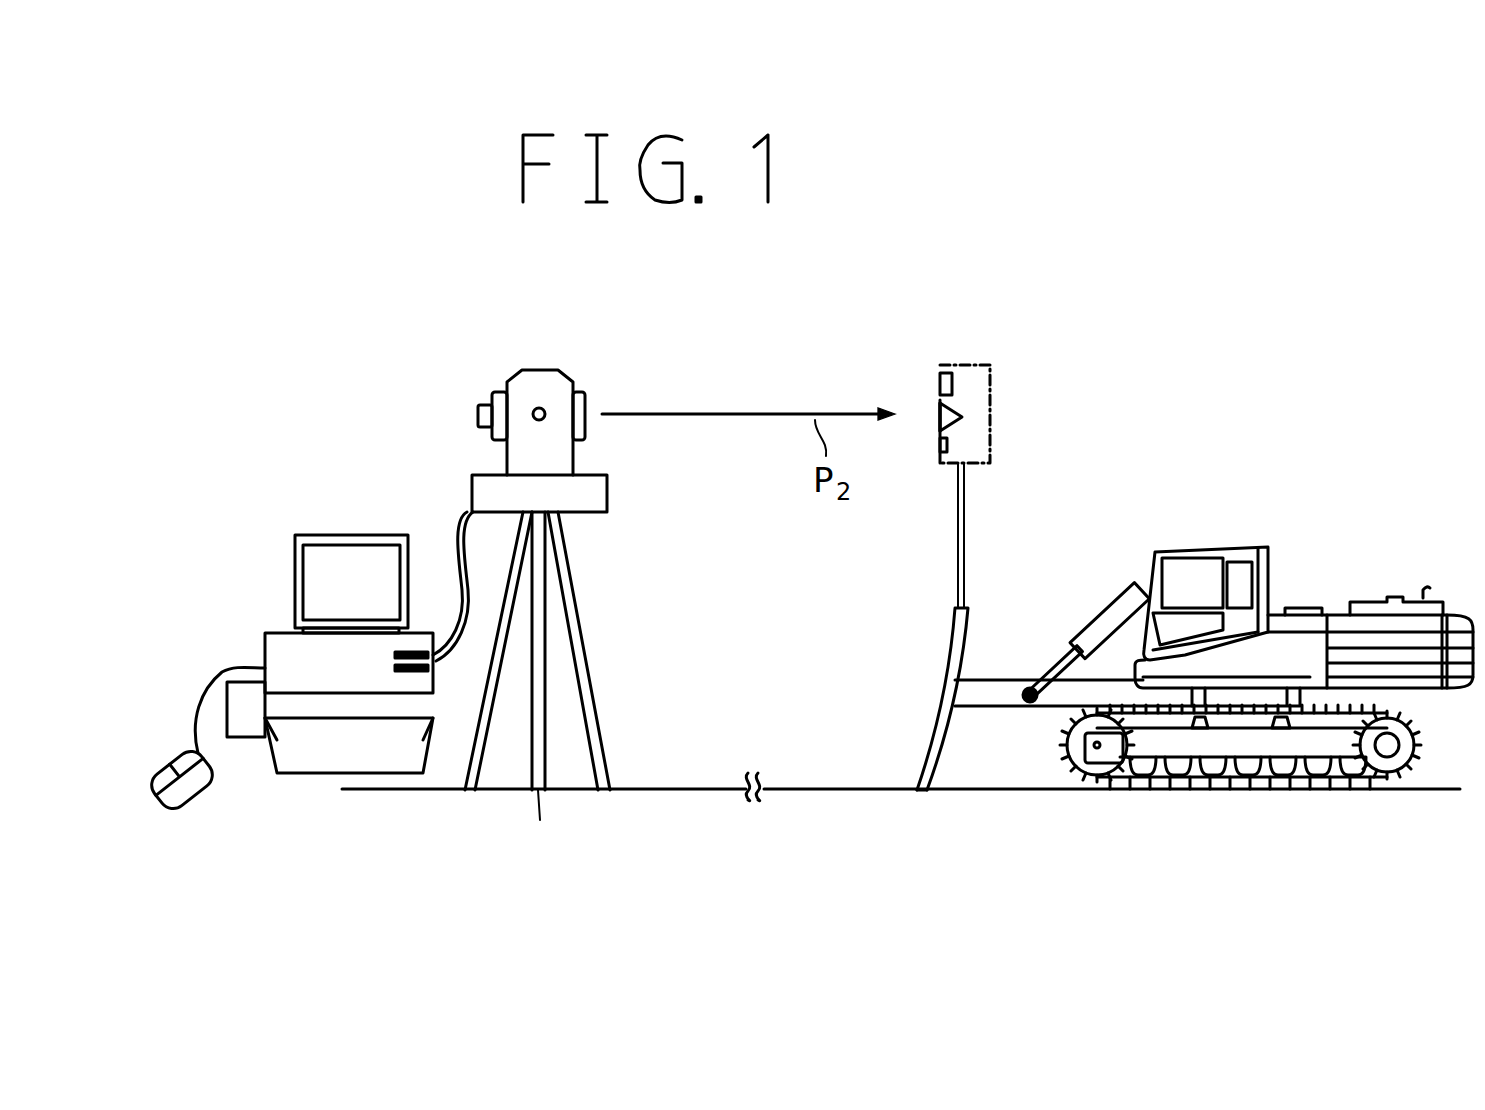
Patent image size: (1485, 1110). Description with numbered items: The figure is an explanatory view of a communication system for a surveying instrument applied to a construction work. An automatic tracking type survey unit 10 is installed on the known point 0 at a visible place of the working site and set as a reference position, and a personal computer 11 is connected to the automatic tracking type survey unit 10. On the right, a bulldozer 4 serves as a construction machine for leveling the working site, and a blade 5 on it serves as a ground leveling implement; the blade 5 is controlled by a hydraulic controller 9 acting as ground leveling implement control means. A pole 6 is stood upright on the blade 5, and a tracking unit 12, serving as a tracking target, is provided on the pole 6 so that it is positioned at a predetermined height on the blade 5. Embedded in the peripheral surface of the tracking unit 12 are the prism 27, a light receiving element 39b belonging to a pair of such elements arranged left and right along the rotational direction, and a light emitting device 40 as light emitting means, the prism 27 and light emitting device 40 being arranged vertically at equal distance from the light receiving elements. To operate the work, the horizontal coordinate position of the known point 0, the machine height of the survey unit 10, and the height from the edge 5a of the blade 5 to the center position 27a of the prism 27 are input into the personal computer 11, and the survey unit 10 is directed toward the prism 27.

The bulldozer 4 is at (1214, 654).
The blade 5 is at (940, 698).
The edge of the blade 5a is at (918, 790).
The pole 6 is at (963, 578).
The hydraulic controller 9 is at (1093, 630).
The automatic tracking type survey unit 10 is at (577, 374).
The personal computer 11 is at (350, 678).
The tracking unit 12 is at (958, 409).
The prism 27 is at (958, 415).
The center position of the prism 27a is at (940, 412).
The light receiving element 39b is at (940, 385).
The light emitting device 40 is at (947, 445).
The known point 0 is at (539, 828).